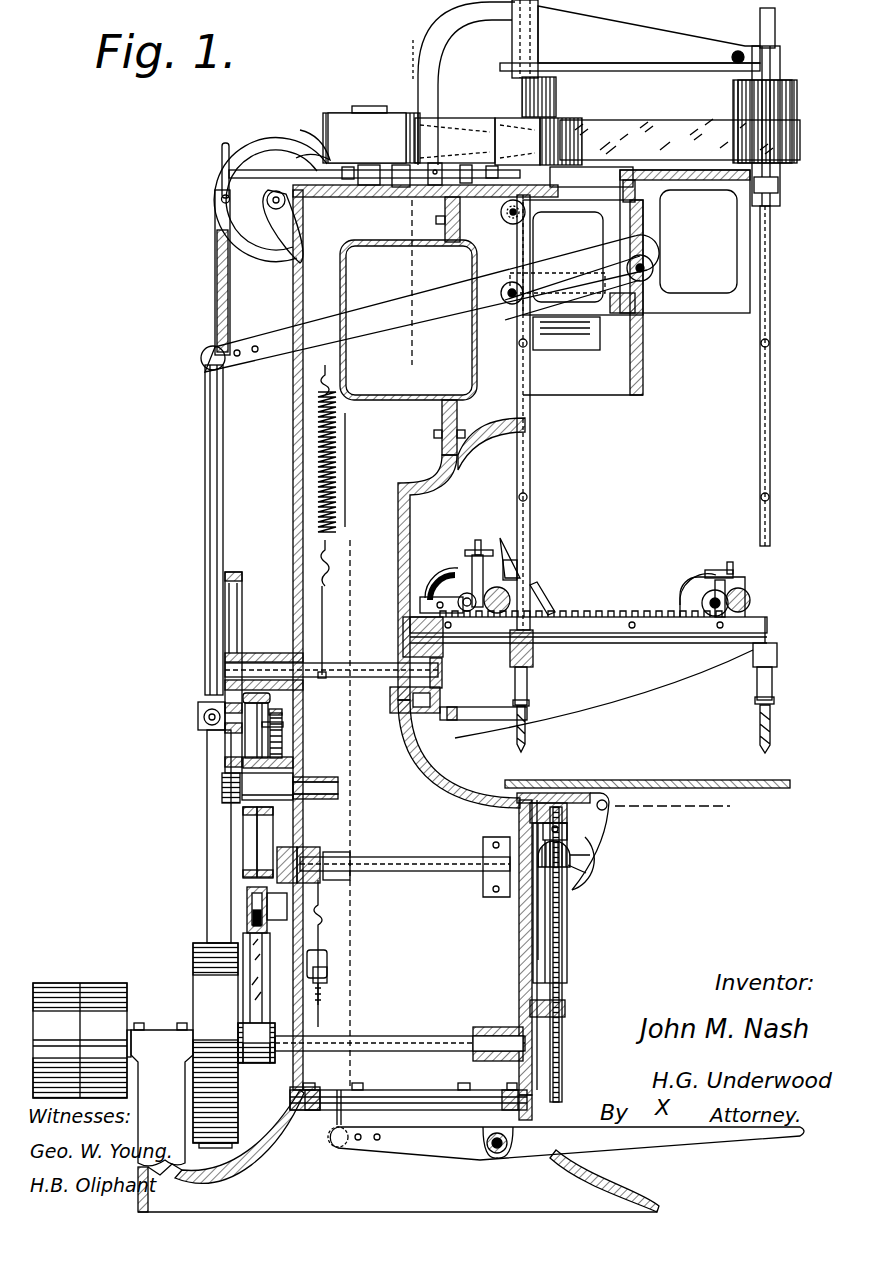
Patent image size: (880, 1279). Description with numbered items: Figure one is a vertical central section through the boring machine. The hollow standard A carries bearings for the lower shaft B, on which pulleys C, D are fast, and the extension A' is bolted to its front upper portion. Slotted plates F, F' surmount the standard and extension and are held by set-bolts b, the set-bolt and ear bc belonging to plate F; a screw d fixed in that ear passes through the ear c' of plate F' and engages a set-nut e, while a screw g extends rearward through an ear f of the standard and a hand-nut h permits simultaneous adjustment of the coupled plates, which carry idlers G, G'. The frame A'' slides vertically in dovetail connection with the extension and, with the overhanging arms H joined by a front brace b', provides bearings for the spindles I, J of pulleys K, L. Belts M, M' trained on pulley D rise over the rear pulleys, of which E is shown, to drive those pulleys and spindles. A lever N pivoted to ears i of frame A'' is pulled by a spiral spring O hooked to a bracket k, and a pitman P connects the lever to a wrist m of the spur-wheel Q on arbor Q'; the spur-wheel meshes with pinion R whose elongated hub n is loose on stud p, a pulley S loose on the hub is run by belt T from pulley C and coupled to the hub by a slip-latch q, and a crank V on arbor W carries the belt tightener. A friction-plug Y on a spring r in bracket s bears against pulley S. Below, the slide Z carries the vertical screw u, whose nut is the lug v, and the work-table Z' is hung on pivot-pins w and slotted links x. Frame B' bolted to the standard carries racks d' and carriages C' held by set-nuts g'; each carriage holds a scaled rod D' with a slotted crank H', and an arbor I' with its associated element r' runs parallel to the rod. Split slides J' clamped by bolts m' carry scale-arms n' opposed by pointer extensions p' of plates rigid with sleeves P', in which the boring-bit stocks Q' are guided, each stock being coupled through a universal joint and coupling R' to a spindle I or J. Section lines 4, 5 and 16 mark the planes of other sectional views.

The standard A is at (409, 640).
The standard extension A' is at (566, 372).
The frame A'' is at (680, 241).
The lower shaft B is at (400, 1028).
The frame B' is at (588, 662).
The pulley C is at (256, 1043).
The carriage C' is at (568, 586).
The pulley D is at (135, 1054).
The scaled rod D' is at (642, 592).
The pulley E is at (262, 152).
The slotted plate F is at (351, 221).
The slotted plate F' is at (591, 177).
The idler G is at (371, 134).
The idler G' is at (538, 141).
The overhanging arm H is at (630, 39).
The segmentally-slotted crank H' is at (437, 562).
The spindle I is at (583, 297).
The arbor I' is at (597, 567).
The spindle J is at (774, 277).
The split slide J' is at (521, 783).
The pulley K is at (557, 92).
The pulley L is at (733, 103).
The belt M is at (419, 224).
The belt M' is at (508, 219).
The lever N is at (430, 303).
The spiral spring O is at (338, 450).
The pitman P is at (194, 654).
The sleeve P' is at (461, 684).
The spur-wheel Q is at (234, 672).
The arbor Q' is at (519, 634).
The pinion R is at (202, 800).
The coupling R' is at (637, 412).
The pulley S is at (250, 860).
The belt T is at (256, 978).
The crank V is at (305, 852).
The arbor W is at (405, 865).
The friction-plug Y is at (250, 895).
The vertical slide Z is at (568, 903).
The work-table Z' is at (647, 772).
The set-bolt b is at (459, 148).
The front brace b' is at (722, 49).
The set-bolt and ear bc is at (415, 161).
The ear c' is at (450, 160).
The screw d is at (417, 215).
The rack d' is at (559, 625).
The set-nut e is at (502, 216).
The ear f is at (300, 148).
The screw g is at (292, 226).
The set-nut g' is at (604, 540).
The hand-nut h is at (222, 176).
The ear i is at (640, 262).
The bracket k is at (330, 972).
The wrist m is at (187, 717).
The clamp-bolt m' is at (459, 572).
The hub n is at (267, 786).
The segmental scale-arm n' is at (529, 545).
The stud p is at (333, 785).
The pointer extension p' is at (538, 557).
The slip-latch q is at (285, 752).
The spiral spring r is at (236, 915).
The lever r' is at (551, 585).
The bracket s is at (280, 920).
The vertical screw u is at (562, 905).
The tapped lug v is at (568, 1010).
The pivot-pin w is at (581, 841).
The slotted link x is at (515, 735).
The section line 4 is at (411, 64).
The section line 5 is at (284, 709).
The section line 16 is at (725, 796).